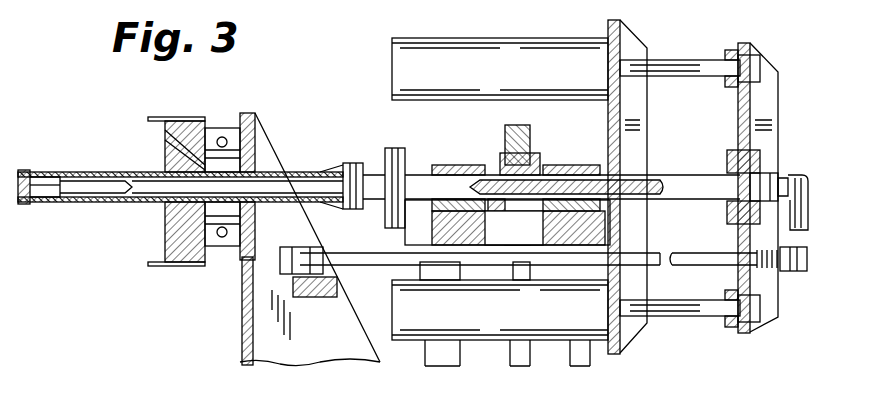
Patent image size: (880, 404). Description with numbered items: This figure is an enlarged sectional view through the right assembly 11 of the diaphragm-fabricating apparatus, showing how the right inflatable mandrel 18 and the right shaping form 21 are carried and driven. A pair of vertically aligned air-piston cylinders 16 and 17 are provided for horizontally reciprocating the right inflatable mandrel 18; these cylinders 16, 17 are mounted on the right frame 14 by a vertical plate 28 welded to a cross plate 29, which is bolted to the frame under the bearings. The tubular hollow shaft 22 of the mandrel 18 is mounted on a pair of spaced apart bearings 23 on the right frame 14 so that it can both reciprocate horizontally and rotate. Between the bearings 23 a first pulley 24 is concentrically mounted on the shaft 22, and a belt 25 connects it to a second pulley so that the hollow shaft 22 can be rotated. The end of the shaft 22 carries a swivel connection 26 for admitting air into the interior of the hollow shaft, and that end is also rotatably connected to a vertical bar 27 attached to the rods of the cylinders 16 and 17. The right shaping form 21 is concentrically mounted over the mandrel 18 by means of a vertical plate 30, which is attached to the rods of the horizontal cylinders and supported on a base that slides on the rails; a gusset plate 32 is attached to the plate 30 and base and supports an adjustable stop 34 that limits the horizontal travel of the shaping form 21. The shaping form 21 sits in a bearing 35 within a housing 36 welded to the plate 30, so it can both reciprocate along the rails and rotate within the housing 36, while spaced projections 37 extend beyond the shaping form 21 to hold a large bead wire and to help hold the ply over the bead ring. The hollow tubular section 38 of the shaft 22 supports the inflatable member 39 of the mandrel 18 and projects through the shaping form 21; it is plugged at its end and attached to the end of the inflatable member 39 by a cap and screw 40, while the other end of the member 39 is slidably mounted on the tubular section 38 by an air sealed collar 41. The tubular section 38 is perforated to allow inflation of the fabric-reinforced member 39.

The right assembly 11 is at (378, 98).
The right frame 14 is at (445, 352).
The air-piston cylinder 16 is at (507, 55).
The air-piston cylinder 17 is at (500, 323).
The right inflatable mandrel 18 is at (140, 166).
The right shaping form 21 is at (182, 258).
The tubular hollow shaft 22 is at (418, 178).
The bearings 23 is at (458, 166).
The first pulley 24 is at (536, 152).
The belt 25 is at (515, 127).
The swivel connection 26 is at (795, 175).
The vertical bar 27 is at (762, 80).
The vertical plate 28 is at (618, 112).
The cross plate 29 is at (603, 215).
The vertical plate 30 is at (245, 310).
The gusset plate 32 is at (318, 360).
The adjustable stop 34 is at (672, 260).
The bearing 35 is at (225, 132).
The housing 36 is at (257, 135).
The spaced projections 37 is at (160, 118).
The hollow tubular section 38 is at (140, 192).
The inflatable member 39 is at (100, 170).
The cap and screw 40 is at (18, 208).
The air sealed collar 41 is at (348, 164).